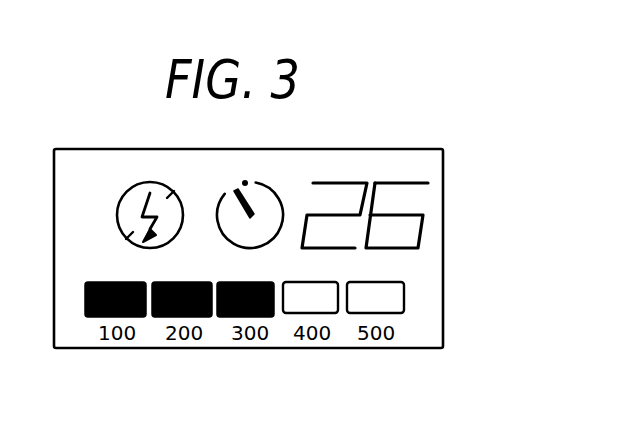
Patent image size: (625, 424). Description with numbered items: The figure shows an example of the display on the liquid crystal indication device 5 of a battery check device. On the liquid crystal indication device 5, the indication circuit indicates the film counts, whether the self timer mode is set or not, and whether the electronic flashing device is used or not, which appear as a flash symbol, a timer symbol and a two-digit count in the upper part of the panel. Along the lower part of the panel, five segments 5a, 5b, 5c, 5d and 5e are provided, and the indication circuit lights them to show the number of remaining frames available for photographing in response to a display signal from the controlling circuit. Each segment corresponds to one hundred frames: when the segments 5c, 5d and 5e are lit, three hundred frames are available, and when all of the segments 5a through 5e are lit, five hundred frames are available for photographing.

The liquid crystal indication device 5 is at (443, 222).
The segment 5a is at (402, 315).
The segment 5b is at (335, 315).
The segment 5c is at (274, 318).
The segment 5d is at (207, 318).
The segment 5e is at (137, 318).